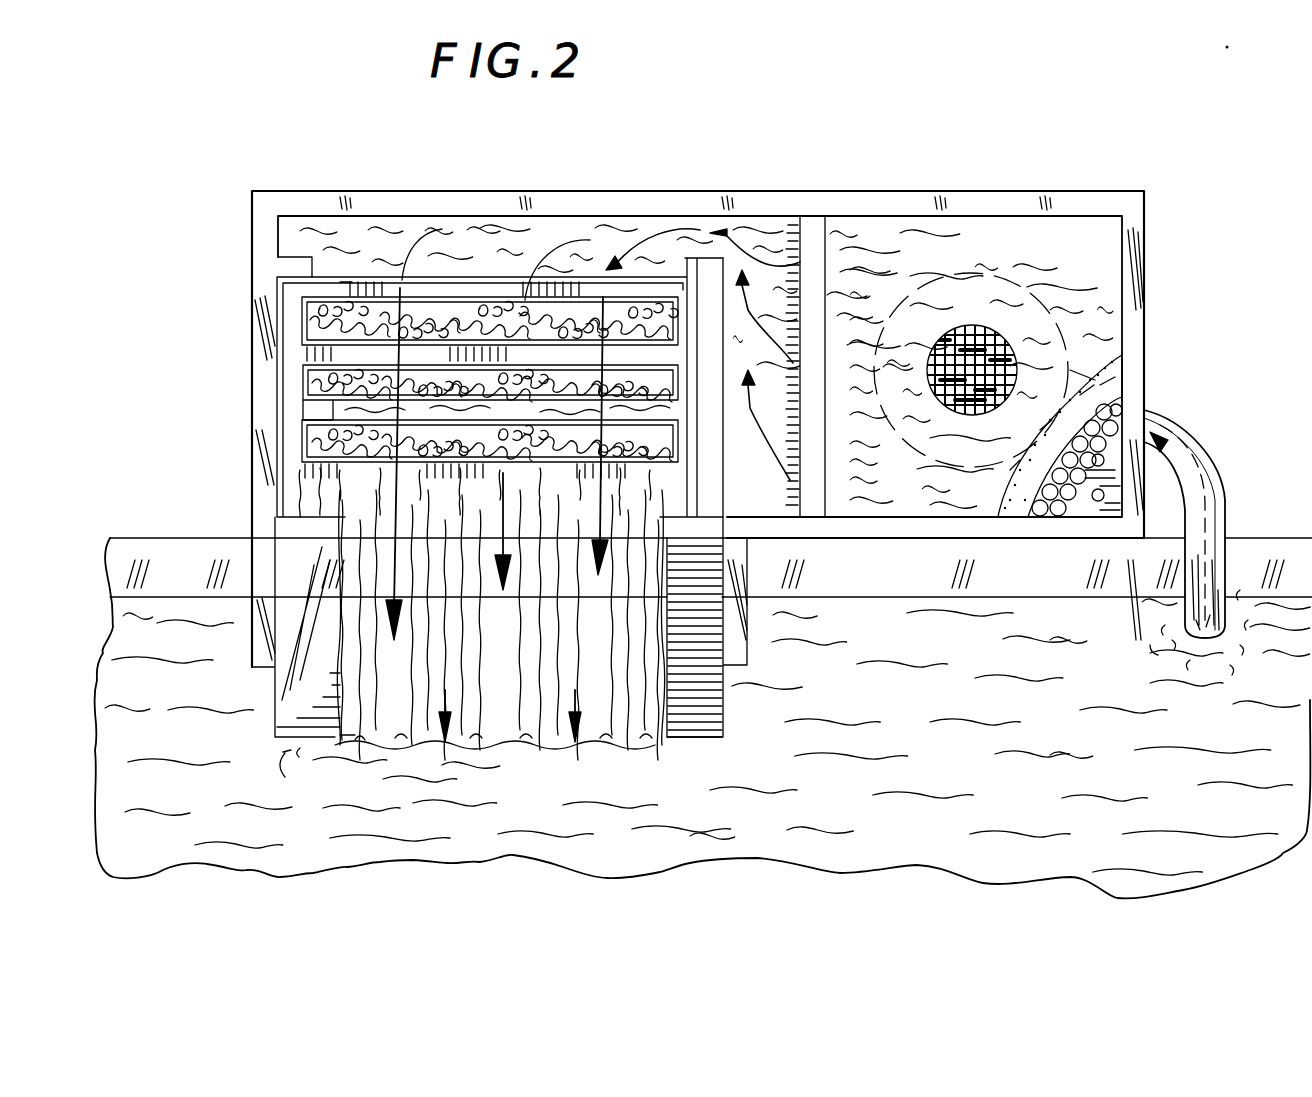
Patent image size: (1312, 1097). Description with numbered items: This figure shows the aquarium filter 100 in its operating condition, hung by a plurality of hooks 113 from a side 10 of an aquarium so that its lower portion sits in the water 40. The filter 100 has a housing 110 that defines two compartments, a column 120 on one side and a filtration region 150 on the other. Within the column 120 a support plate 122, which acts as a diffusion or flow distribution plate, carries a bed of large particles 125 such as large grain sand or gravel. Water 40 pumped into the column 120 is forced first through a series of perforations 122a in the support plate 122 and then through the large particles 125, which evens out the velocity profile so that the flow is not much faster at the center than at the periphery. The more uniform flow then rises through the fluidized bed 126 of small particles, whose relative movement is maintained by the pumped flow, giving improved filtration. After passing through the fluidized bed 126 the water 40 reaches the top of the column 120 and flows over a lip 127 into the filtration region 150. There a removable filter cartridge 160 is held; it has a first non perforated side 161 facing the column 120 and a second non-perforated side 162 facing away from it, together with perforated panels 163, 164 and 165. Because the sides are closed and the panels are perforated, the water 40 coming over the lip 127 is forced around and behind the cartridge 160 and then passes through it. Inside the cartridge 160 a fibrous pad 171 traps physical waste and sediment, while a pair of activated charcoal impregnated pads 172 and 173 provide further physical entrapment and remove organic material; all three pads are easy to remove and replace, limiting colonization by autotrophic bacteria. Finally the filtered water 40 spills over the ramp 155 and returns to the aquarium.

The side 10 is at (118, 542).
The water 40 is at (1100, 710).
The filter 100 is at (1300, 300).
The housing 110 is at (806, 205).
The hooks 113 is at (253, 598).
The column 120 is at (1110, 118).
The support plate 122 is at (1095, 505).
The perforations 122a is at (1098, 460).
The large particles 125 is at (1137, 404).
The fluidized bed 126 is at (1122, 368).
The lip 127 is at (812, 244).
The filtration region 150 is at (607, 133).
The ramp 155 is at (717, 703).
The filter cartridge 160 is at (280, 397).
The first non perforated side 161 is at (690, 288).
The second non-perforated side 162 is at (275, 293).
The perforated panel 163 is at (355, 280).
The perforated panel 164 is at (388, 352).
The perforated panel 165 is at (297, 452).
The fibrous pad 171 is at (260, 315).
The activated charcoal impregnated pad 172 is at (262, 370).
The activated charcoal impregnated pad 173 is at (298, 440).